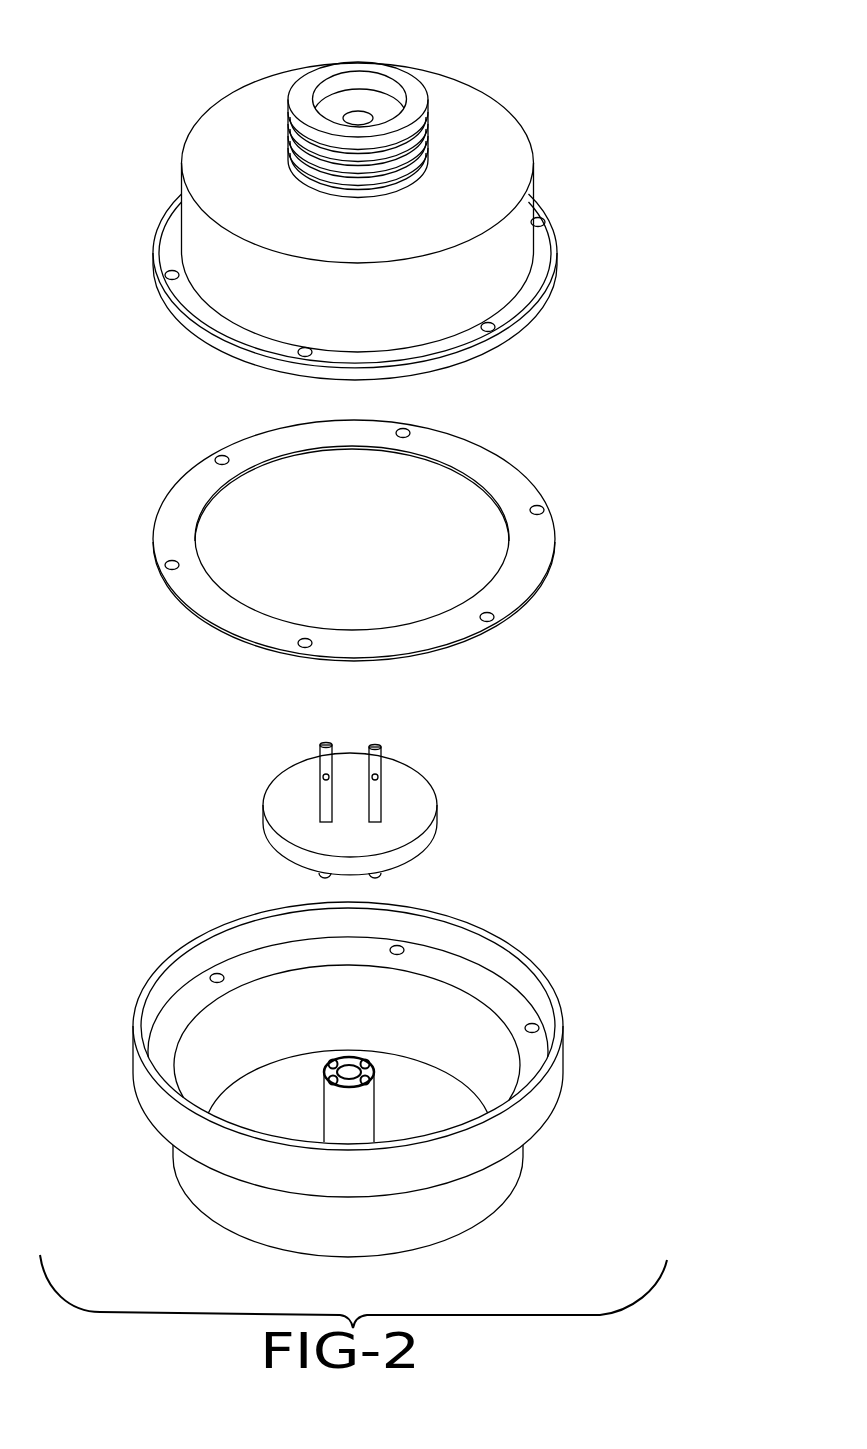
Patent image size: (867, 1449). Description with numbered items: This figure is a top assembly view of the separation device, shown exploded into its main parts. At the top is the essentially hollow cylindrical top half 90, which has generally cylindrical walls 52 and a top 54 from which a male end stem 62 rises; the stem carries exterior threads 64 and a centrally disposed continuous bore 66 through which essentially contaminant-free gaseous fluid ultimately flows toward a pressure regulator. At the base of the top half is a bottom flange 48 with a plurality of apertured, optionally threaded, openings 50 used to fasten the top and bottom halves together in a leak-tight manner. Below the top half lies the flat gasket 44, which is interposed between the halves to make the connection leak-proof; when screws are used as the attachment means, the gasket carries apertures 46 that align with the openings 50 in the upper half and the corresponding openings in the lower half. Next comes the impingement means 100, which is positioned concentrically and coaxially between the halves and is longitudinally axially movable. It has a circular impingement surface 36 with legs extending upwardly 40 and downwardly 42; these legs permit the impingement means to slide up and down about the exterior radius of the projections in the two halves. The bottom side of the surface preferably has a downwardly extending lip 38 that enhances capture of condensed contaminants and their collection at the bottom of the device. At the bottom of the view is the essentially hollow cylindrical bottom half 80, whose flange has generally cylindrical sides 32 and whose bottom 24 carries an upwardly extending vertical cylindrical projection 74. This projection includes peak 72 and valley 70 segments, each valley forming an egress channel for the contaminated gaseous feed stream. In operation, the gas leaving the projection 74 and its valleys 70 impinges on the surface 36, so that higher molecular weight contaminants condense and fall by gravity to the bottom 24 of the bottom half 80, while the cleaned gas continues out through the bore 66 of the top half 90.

The bottom 24 is at (516, 1190).
The cylindrical sides 32 is at (497, 930).
The impingement surface 36 is at (418, 775).
The downwardly extending lip 38 is at (443, 840).
The upwardly extending legs 40 is at (380, 745).
The downwardly extending legs 42 is at (308, 883).
The gasket 44 is at (482, 450).
The gasket apertures 46 is at (544, 508).
The bottom flange 48 is at (548, 300).
The apertured openings 50 is at (540, 220).
The cylindrical walls 52 is at (175, 215).
The top 54 is at (482, 85).
The male end stem 62 is at (382, 72).
The exterior threads 64 is at (430, 133).
The continuous bore 66 is at (353, 115).
The valley segments 70 is at (348, 1066).
The peak segments 72 is at (377, 1063).
The upwardly extending vertical cylindrical projection 74 is at (322, 1085).
The bottom half 80 is at (431, 1066).
The top half 90 is at (388, 190).
The impingement means 100 is at (448, 773).